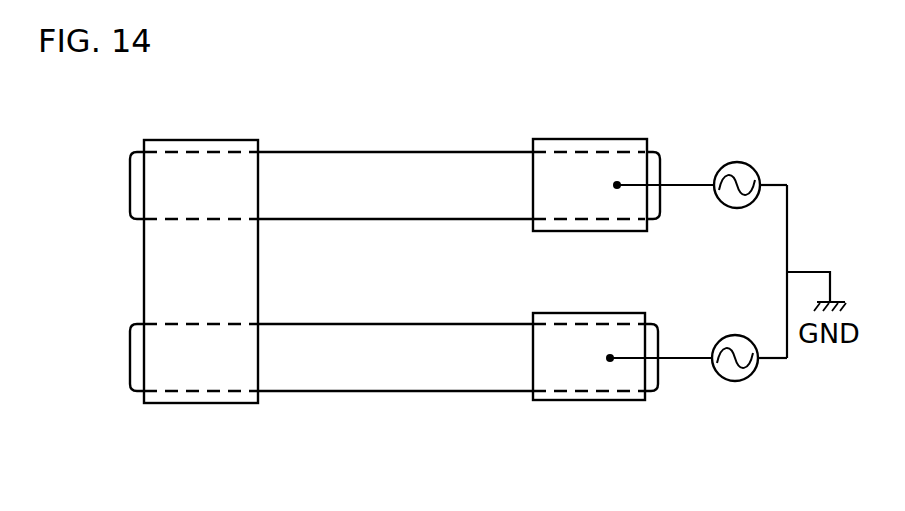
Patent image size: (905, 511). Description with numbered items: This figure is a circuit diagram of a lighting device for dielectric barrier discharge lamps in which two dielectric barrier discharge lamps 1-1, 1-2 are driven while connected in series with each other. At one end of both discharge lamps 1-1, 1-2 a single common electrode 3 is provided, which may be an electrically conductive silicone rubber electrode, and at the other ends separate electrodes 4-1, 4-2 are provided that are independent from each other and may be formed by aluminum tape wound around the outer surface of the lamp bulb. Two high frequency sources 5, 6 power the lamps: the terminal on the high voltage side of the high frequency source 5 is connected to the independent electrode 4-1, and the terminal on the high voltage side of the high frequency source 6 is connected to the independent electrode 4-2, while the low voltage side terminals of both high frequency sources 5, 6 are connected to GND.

The common electrode 3 is at (209, 140).
The dielectric barrier discharge lamp 1-1 is at (400, 152).
The dielectric barrier discharge lamp 1-2 is at (372, 391).
The independent electrode 4-1 is at (582, 139).
The independent electrode 4-2 is at (583, 400).
The high frequency source 5 is at (745, 163).
The high frequency source 6 is at (742, 381).